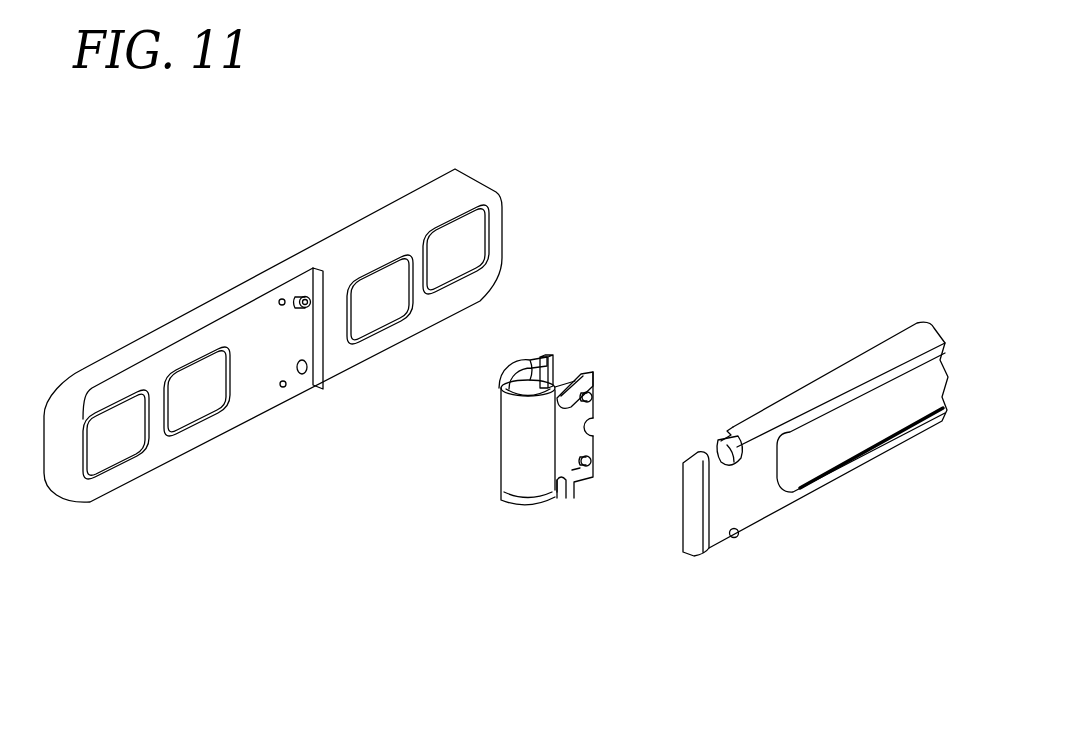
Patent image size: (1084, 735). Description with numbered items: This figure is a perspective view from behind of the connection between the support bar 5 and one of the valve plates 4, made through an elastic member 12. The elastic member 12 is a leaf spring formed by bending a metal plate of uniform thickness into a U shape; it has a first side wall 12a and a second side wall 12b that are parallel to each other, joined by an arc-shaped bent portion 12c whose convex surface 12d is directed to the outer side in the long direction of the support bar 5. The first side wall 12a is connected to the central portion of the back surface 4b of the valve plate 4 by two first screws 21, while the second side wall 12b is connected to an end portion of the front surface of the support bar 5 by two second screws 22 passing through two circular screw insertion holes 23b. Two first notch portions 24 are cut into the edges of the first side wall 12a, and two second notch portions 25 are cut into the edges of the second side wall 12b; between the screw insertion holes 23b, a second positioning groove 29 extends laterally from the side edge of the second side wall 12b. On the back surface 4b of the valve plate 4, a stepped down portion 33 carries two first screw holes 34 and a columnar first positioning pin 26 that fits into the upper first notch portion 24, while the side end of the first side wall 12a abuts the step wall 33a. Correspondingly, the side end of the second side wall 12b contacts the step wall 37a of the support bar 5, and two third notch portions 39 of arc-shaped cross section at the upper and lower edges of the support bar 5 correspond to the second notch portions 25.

The valve plate 4 is at (409, 207).
The back surface 4b is at (158, 450).
The stepped down portion 33 is at (238, 332).
The step wall 33a is at (311, 392).
The first screw holes 34 is at (283, 298).
The first positioning pin 26 is at (306, 300).
The elastic member 12 is at (478, 429).
The first side wall 12a is at (517, 365).
The second side wall 12b is at (598, 410).
The bent portion 12c is at (515, 484).
The convex surface 12d is at (556, 490).
The first screws 21 is at (500, 394).
The second screws 22 is at (594, 378).
The screw insertion holes 23b is at (577, 473).
The first notch portions 24 is at (537, 358).
The second notch portions 25 is at (587, 372).
The second positioning groove 29 is at (596, 428).
The support bar 5 is at (847, 380).
The step wall 37a is at (728, 432).
The third notch portions 39 is at (741, 458).